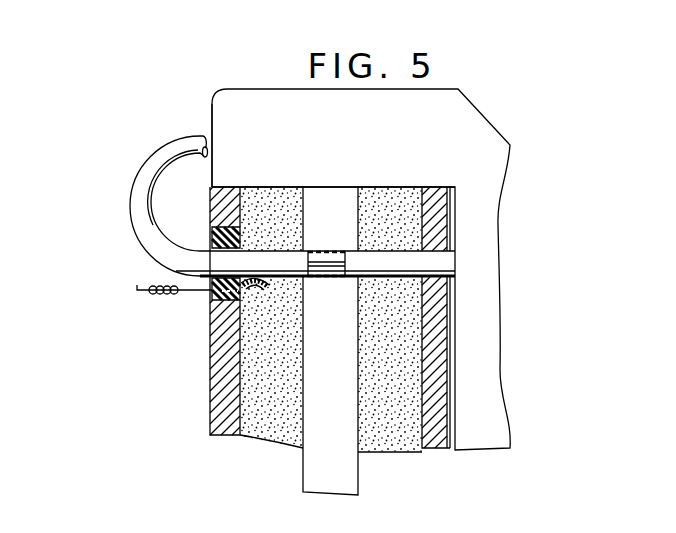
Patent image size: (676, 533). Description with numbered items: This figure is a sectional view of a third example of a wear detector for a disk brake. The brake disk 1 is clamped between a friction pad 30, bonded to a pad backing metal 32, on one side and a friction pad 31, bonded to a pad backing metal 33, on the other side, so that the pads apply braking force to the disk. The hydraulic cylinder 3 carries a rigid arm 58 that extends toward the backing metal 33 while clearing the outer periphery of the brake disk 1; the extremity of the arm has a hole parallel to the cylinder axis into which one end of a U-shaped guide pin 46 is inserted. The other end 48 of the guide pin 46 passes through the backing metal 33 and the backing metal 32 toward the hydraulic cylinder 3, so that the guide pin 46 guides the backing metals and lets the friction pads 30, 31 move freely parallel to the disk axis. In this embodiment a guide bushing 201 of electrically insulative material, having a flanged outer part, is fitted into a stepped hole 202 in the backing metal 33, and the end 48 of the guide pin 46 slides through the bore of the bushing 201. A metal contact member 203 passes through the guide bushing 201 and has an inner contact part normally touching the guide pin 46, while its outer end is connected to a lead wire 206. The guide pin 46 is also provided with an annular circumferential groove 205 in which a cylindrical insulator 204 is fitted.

The brake disk 1 is at (337, 480).
The hydraulic cylinder 3 is at (208, 106).
The friction pad 30 is at (390, 449).
The friction pad 31 is at (265, 438).
The pad backing metal 32 is at (437, 440).
The pad backing metal 33 is at (224, 436).
The guide pin 46 is at (140, 211).
The other end of guide pin 48 is at (400, 251).
The rigid arm 58 is at (382, 147).
The guide bushing 201 is at (211, 305).
The stepped hole 202 is at (217, 227).
The metal contact member 203 is at (254, 288).
The cylindrical insulator 204 is at (327, 281).
The annular circumferential groove 205 is at (330, 250).
The lead wire 206 is at (138, 292).